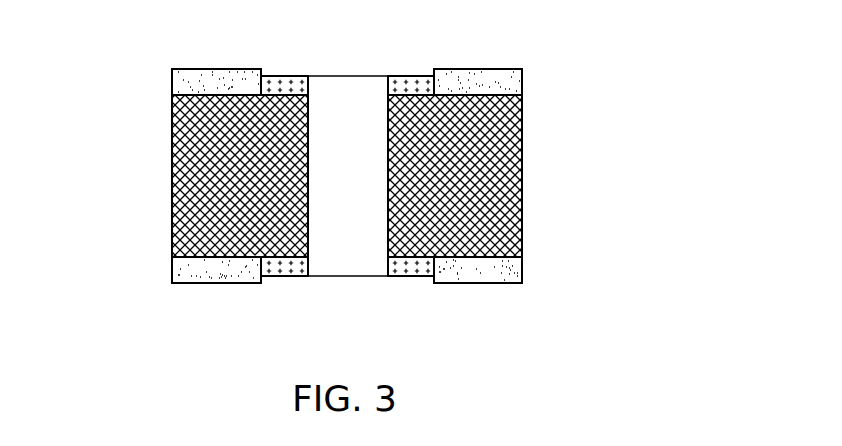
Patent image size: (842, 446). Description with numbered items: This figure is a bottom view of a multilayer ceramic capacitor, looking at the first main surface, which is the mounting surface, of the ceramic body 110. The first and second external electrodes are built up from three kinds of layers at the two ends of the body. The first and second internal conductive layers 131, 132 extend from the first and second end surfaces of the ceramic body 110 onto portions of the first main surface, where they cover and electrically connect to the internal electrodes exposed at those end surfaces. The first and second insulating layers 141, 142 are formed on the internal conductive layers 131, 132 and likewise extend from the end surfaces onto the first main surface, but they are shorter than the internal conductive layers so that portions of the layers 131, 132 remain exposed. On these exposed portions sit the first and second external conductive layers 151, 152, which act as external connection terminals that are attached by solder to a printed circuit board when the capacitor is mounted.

The ceramic body 110 is at (347, 260).
The first internal conductive layer 131 is at (280, 79).
The second internal conductive layer 132 is at (405, 79).
The first insulating layer 141 is at (172, 83).
The second insulating layer 142 is at (516, 78).
The first external conductive layer 151 is at (172, 178).
The second external conductive layer 152 is at (522, 172).